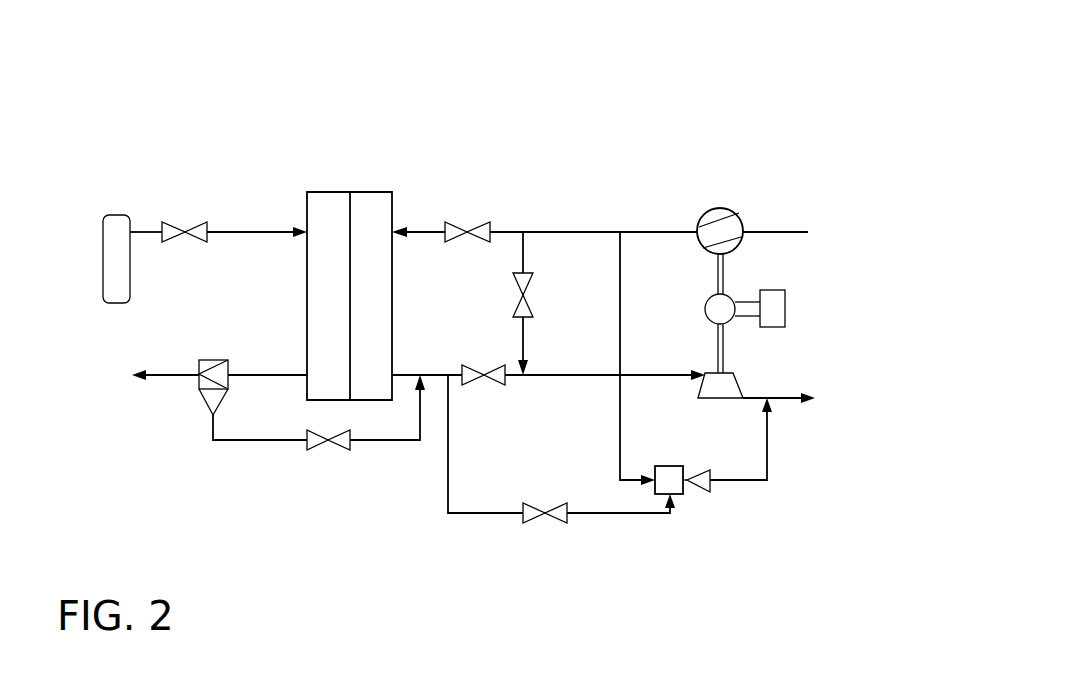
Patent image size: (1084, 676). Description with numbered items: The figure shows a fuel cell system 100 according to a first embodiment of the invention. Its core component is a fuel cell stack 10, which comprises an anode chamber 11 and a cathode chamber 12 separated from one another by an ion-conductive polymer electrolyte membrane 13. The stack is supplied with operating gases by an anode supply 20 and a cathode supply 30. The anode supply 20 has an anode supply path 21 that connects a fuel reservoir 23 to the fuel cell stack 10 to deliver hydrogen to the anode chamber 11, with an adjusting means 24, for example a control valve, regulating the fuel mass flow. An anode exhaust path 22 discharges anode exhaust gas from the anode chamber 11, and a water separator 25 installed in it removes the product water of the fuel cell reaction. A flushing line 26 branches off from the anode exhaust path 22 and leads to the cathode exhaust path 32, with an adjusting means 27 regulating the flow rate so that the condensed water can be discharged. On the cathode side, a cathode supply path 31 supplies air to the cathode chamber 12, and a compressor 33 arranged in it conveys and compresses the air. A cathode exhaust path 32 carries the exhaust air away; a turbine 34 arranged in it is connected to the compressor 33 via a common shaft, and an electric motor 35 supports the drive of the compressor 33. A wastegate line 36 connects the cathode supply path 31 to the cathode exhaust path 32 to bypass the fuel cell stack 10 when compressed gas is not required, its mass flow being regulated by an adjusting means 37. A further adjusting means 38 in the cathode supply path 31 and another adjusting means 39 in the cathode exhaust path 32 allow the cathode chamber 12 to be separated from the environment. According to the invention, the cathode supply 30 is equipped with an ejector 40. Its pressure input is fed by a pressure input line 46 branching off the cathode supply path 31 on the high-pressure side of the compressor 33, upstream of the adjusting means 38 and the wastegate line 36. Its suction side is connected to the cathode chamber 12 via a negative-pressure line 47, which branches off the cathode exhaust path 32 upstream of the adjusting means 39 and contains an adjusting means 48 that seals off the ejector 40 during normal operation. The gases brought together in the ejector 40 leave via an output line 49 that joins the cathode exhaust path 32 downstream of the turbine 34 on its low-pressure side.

The fuel cell system 100 is at (558, 124).
The fuel cell stack 10 is at (348, 160).
The anode chamber 11 is at (323, 210).
The cathode chamber 12 is at (368, 210).
The polymer electrolyte membrane 13 is at (350, 293).
The anode supply 20 is at (190, 130).
The anode supply path 21 is at (247, 232).
The anode exhaust path 22 is at (175, 375).
The fuel reservoir 23 is at (118, 232).
The adjusting means 24 is at (200, 238).
The water separator 25 is at (208, 361).
The flushing line 26 is at (408, 440).
The adjusting means 27 is at (342, 442).
The cathode supply 30 is at (637, 180).
The cathode supply path 31 is at (580, 232).
The cathode exhaust path 32 is at (593, 375).
The compressor 33 is at (719, 214).
The turbine 34 is at (716, 389).
The electric motor 35 is at (720, 313).
The wastegate line 36 is at (523, 257).
The adjusting means 37 is at (523, 303).
The adjusting means 38 is at (482, 232).
The adjusting means 39 is at (500, 375).
The ejector 40 is at (663, 475).
The pressure input line 46 is at (620, 277).
The negative-pressure line 47 is at (482, 513).
The adjusting means 48 is at (562, 513).
The output line 49 is at (732, 480).